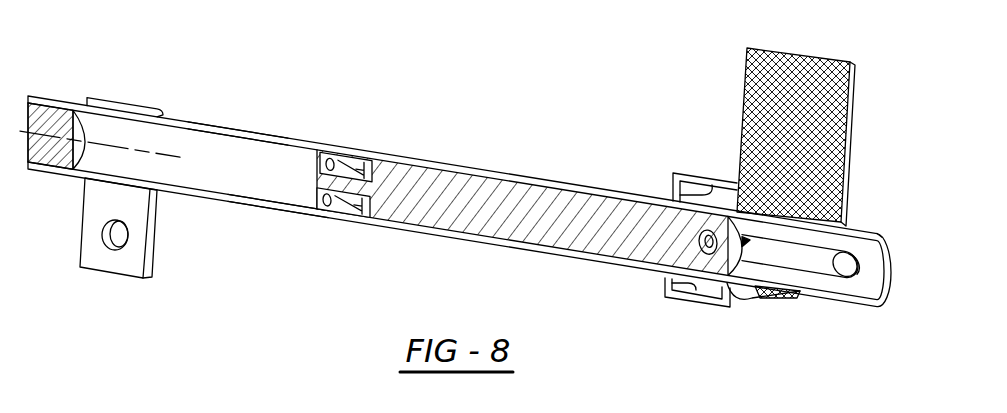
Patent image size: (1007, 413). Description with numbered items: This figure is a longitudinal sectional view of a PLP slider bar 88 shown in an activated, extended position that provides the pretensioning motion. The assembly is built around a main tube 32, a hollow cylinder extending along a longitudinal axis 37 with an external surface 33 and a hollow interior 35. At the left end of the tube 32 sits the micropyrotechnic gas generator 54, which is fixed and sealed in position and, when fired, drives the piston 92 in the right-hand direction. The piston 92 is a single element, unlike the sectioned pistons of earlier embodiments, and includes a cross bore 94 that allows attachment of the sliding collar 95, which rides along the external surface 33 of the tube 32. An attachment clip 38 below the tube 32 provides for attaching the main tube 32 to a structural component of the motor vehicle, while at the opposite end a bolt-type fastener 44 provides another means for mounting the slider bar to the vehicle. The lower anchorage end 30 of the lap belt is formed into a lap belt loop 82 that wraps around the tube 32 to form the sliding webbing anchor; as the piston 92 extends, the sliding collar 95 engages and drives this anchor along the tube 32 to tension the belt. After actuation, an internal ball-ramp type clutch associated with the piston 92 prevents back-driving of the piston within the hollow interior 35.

The lower anchorage end 30 is at (850, 150).
The main tube 32 is at (258, 132).
The external surface 33 is at (262, 206).
The hollow interior 35 is at (232, 139).
The longitudinal axis 37 is at (120, 143).
The attachment clip 38 is at (100, 203).
The bolt-type fastener 44 is at (845, 264).
The micropyrotechnic gas generator 54 is at (48, 120).
The lap belt loop 82 is at (775, 293).
The PLP slider bar 88 is at (529, 157).
The piston 92 is at (520, 198).
The cross bore 94 is at (712, 246).
The sliding collar 95 is at (712, 181).